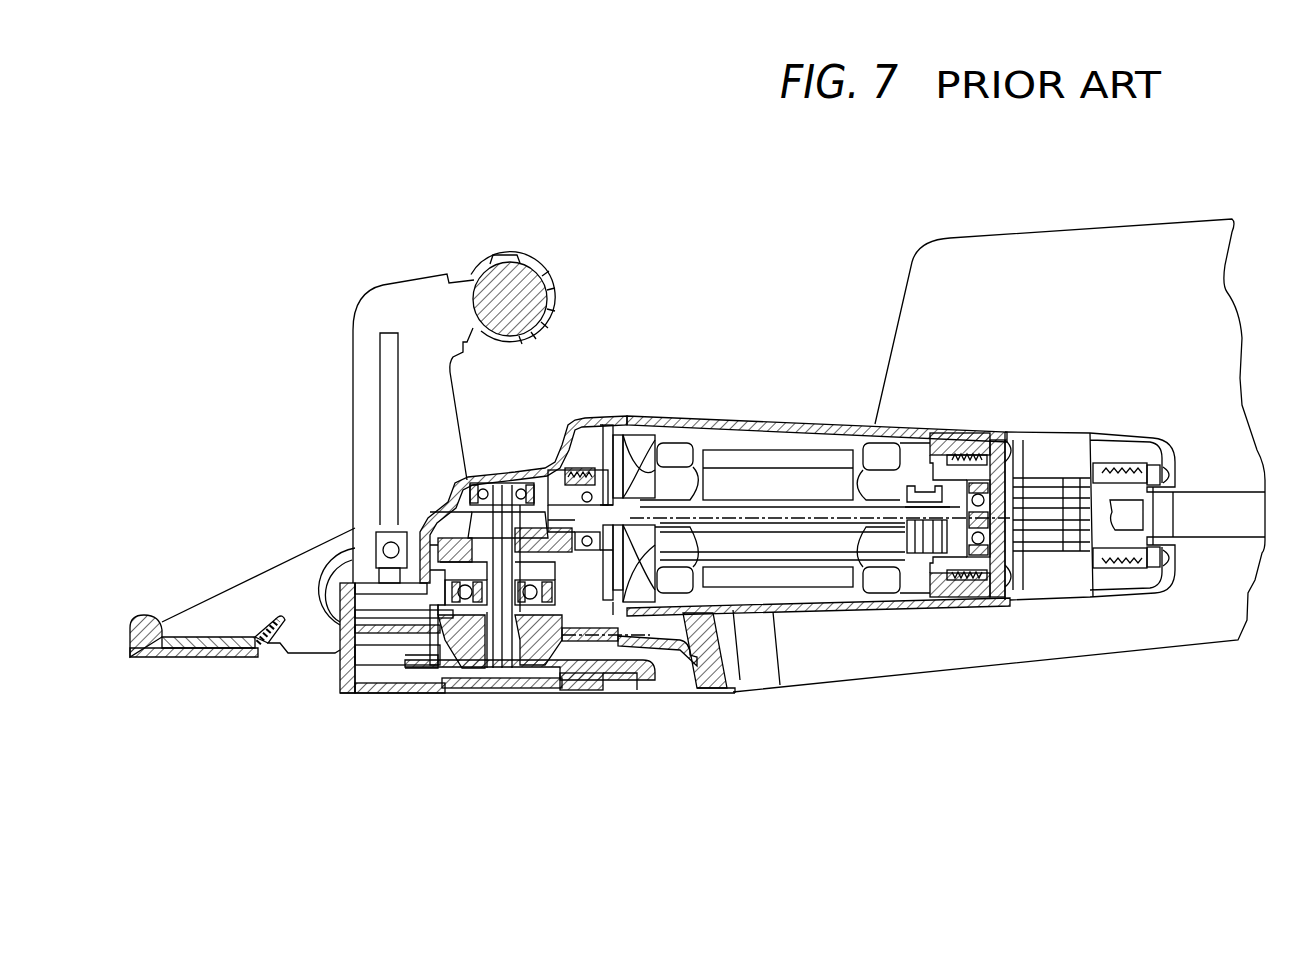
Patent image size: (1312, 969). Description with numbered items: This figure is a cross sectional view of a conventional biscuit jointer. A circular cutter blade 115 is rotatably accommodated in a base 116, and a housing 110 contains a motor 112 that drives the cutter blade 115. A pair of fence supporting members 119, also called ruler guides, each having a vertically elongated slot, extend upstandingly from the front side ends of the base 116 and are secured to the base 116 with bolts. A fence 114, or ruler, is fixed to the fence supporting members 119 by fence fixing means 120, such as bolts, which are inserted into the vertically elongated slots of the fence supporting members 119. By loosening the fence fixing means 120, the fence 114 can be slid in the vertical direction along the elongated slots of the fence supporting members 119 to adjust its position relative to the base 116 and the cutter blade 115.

The housing 110 is at (757, 425).
The motor 112 is at (820, 455).
The fence 114 is at (290, 572).
The circular cutter blade 115 is at (633, 663).
The base 116 is at (713, 690).
The fence supporting member 119 is at (418, 290).
The fence fixing means 120 is at (383, 525).